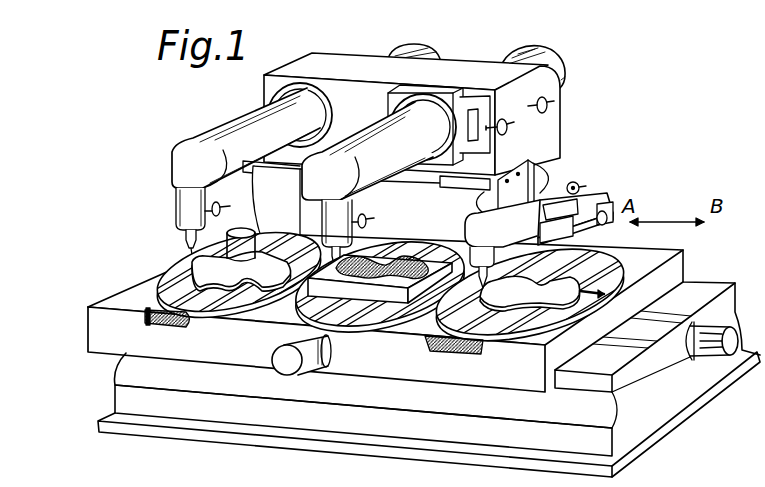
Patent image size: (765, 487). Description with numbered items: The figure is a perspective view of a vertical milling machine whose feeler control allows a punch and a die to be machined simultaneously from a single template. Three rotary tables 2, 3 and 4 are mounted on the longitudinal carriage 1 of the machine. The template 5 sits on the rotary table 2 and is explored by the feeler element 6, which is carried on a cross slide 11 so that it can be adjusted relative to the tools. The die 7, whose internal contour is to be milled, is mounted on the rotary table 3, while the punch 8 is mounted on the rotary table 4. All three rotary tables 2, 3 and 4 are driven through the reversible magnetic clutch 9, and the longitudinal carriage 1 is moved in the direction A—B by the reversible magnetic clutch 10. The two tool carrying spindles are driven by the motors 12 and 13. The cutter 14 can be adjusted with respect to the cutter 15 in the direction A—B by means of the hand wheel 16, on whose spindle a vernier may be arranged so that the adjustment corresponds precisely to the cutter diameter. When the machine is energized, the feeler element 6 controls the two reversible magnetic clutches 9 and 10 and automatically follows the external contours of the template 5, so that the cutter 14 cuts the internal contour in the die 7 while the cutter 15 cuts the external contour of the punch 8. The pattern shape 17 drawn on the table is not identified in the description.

The longitudinal carriage 1 is at (648, 259).
The rotary table 2 is at (616, 274).
The rotary table 3 is at (429, 296).
The rotary table 4 is at (292, 241).
The template 5 is at (575, 292).
The feeler element 6 is at (478, 220).
The die 7 is at (383, 303).
The punch 8 is at (265, 265).
The reversible magnetic clutch 9 is at (308, 368).
The reversible magnetic clutch 10 is at (710, 352).
The cross slide 11 is at (597, 195).
The motor 12 is at (424, 55).
The motor 13 is at (556, 59).
The cutter 14 is at (341, 266).
The cutter 15 is at (188, 256).
The hand wheel 16 is at (508, 131).
The pattern 17 is at (530, 293).